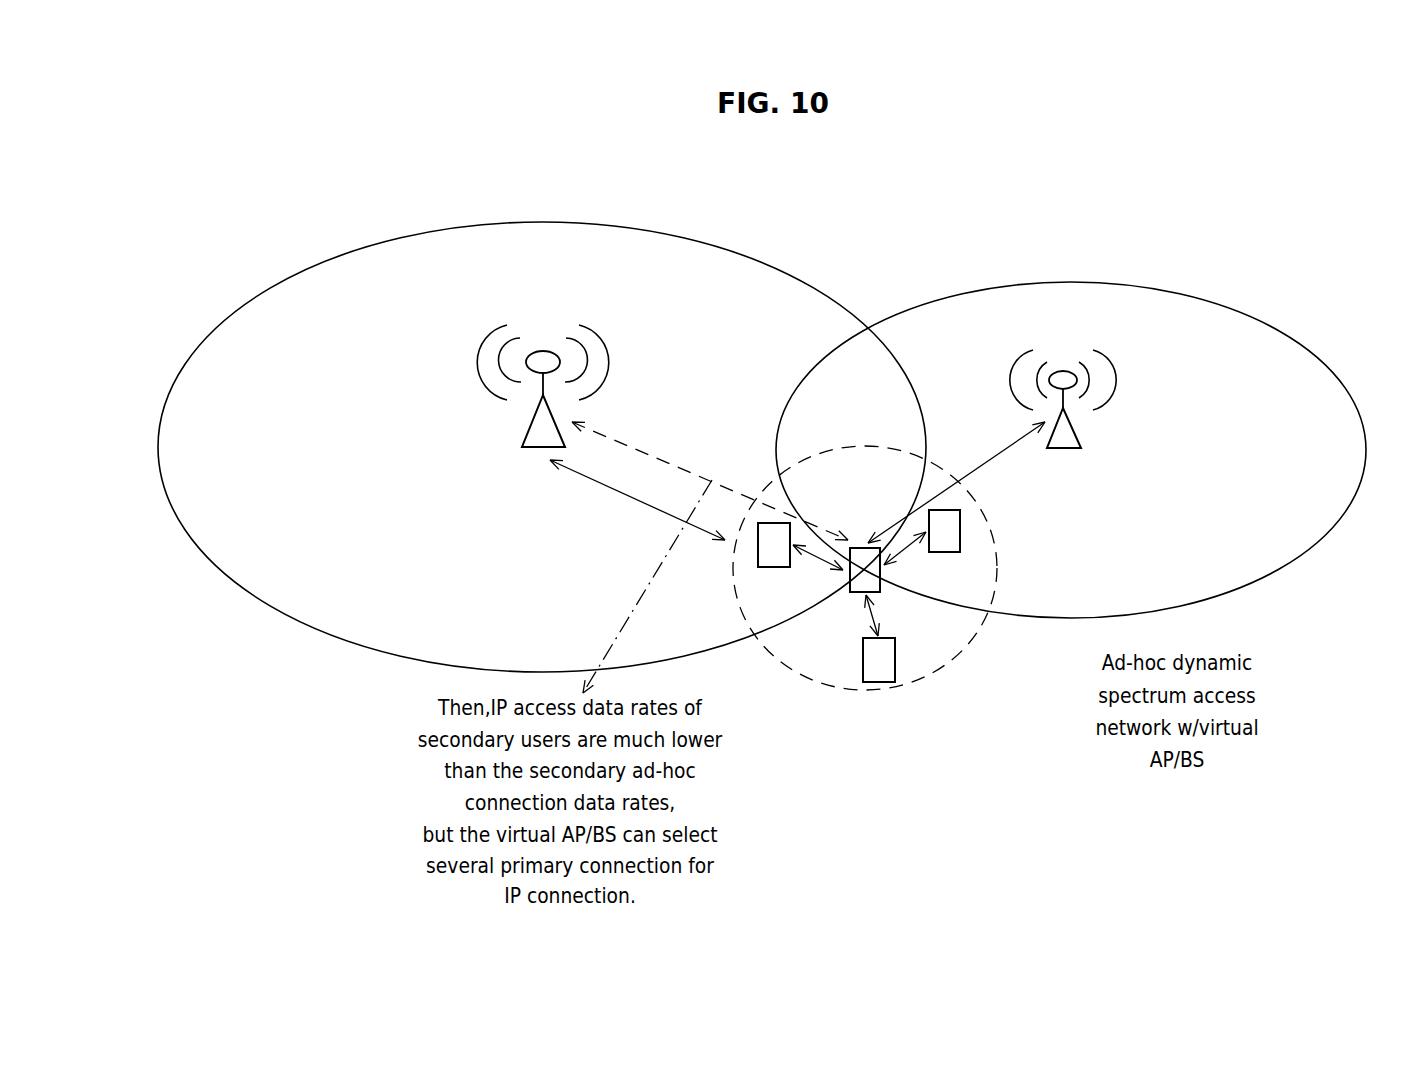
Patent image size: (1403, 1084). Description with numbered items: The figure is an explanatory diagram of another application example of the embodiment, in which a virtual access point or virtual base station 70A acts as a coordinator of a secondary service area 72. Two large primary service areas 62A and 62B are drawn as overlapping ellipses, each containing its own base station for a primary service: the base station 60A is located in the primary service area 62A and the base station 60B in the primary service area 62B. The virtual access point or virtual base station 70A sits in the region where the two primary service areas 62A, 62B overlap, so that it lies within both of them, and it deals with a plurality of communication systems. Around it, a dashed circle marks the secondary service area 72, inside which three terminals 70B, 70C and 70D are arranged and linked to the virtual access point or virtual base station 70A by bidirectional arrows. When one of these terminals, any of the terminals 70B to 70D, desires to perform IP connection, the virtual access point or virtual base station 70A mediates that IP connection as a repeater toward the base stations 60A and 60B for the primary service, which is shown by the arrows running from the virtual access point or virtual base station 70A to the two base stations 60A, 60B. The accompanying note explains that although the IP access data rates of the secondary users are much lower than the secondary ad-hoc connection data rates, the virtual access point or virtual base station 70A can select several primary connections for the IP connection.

The primary service area 62A is at (541, 222).
The primary service area 62B is at (1063, 282).
The base station for a primary service 60A is at (533, 415).
The base station for a primary service 60B is at (1076, 426).
The virtual access point or virtual base station 70A is at (857, 592).
The terminal 70B is at (775, 567).
The terminal 70C is at (943, 552).
The terminal 70D is at (879, 682).
The secondary service area 72 is at (970, 650).